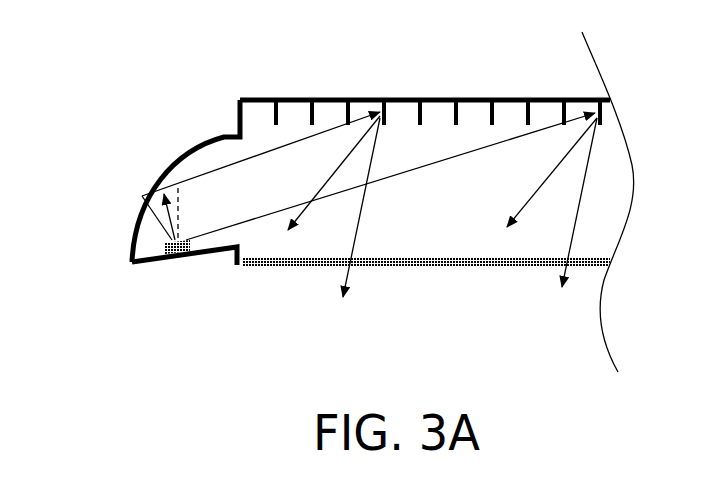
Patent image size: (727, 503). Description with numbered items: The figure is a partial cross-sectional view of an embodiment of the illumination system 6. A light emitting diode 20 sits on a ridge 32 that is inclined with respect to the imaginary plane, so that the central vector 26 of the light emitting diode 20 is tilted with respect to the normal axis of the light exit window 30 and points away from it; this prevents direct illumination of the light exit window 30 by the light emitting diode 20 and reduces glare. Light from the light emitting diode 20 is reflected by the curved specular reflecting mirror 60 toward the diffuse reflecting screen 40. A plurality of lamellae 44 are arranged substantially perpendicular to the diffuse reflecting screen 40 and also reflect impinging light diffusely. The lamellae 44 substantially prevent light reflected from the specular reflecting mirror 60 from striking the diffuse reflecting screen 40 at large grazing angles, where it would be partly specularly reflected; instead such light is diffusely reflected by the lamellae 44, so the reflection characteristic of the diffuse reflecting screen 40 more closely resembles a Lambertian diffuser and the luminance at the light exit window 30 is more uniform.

The illumination system 6 is at (551, 28).
The light emitting diode 20 is at (150, 265).
The central vector 26 is at (166, 230).
The light exit window 30 is at (483, 268).
The ridge 32 is at (228, 262).
The diffuse reflecting screen 40 is at (443, 103).
The lamellae 44 is at (312, 114).
The specular reflecting mirror 60 is at (198, 152).